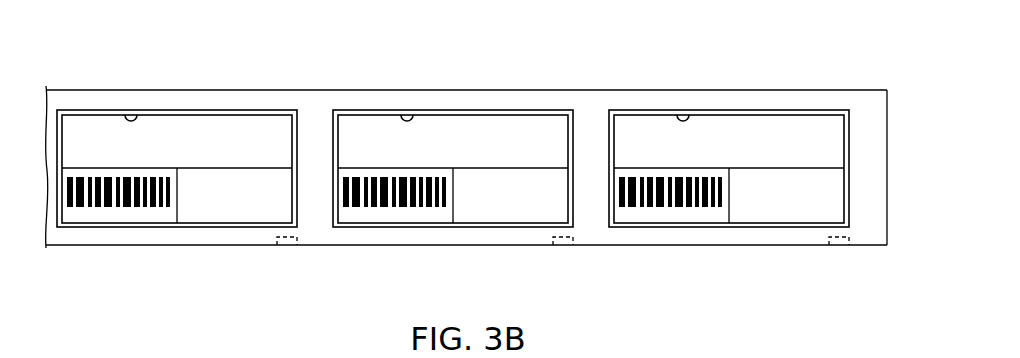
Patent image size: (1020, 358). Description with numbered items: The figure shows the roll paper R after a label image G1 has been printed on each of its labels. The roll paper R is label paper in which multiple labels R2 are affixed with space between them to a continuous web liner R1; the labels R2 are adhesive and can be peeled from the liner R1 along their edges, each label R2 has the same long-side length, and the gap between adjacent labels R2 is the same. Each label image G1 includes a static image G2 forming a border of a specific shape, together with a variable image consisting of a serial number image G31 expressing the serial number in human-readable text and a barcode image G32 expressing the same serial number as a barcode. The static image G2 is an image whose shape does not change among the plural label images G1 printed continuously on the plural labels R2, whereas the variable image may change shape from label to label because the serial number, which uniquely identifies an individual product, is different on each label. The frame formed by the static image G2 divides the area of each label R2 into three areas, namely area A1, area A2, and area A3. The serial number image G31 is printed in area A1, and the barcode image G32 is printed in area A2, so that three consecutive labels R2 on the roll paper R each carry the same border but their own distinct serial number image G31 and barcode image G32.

The roll paper R is at (473, 60).
The liner R1 is at (308, 100).
The label R2 is at (57, 205).
The label image G1 is at (244, 147).
The static image G2 is at (128, 113).
The serial number image G31 is at (177, 126).
The barcode image G32 is at (78, 212).
The area A1 is at (78, 122).
The area A2 is at (165, 214).
The area A3 is at (248, 198).